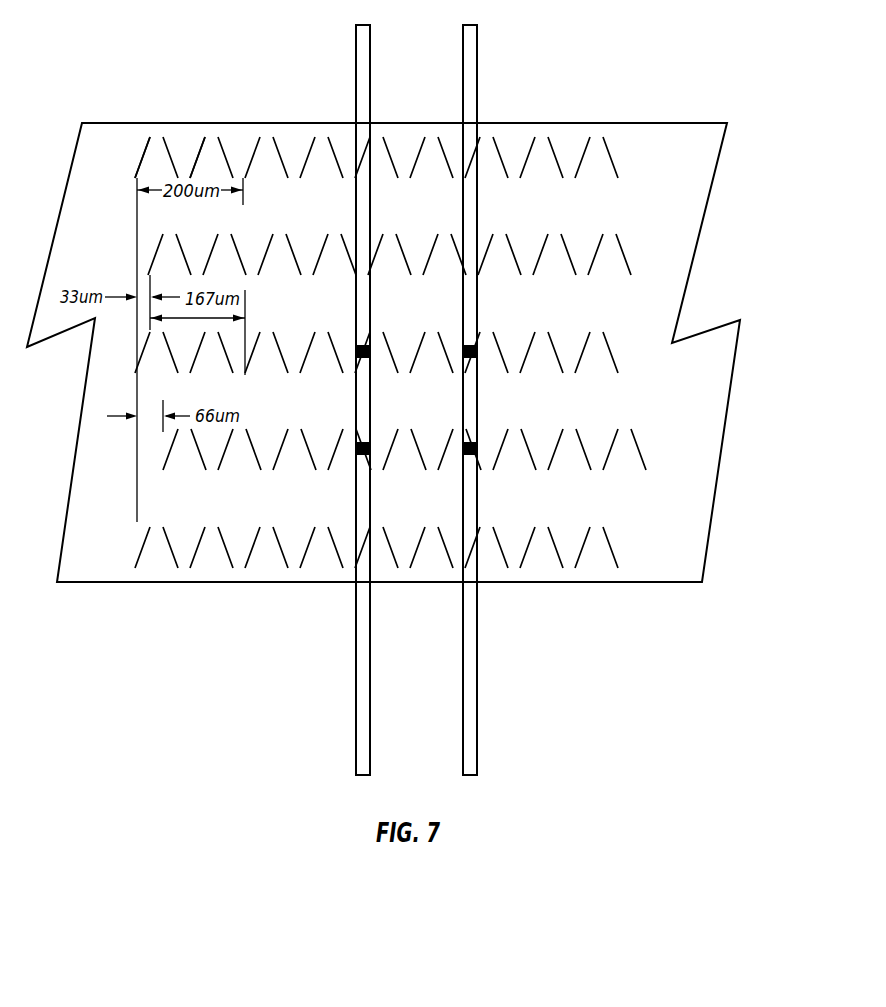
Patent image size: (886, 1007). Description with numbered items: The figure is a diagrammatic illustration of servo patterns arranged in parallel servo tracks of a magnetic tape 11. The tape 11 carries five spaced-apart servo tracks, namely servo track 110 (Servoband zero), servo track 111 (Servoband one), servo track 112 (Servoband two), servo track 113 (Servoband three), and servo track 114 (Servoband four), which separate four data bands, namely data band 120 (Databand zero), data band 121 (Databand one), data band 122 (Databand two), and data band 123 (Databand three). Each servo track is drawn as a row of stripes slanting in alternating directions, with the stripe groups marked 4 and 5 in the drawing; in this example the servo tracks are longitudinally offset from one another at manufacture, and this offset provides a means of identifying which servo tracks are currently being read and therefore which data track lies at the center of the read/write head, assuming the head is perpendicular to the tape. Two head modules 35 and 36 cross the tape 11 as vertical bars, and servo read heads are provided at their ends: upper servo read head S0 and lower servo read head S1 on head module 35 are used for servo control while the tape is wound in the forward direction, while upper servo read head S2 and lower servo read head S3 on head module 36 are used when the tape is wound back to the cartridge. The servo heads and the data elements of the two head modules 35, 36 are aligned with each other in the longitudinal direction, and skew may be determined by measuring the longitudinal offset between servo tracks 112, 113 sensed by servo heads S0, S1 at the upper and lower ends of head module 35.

The magnetic tape 11 is at (570, 123).
The head module 35 is at (370, 70).
The head module 36 is at (477, 70).
The servo track 110 is at (468, 156).
The servo track 111 is at (730, 255).
The servo track 112 is at (720, 355).
The servo track 113 is at (750, 450).
The servo track 114 is at (745, 550).
The data band 120 is at (610, 405).
The data band 121 is at (596, 300).
The data band 122 is at (595, 497).
The data band 123 is at (610, 210).
The upper servo read head S0 is at (374, 340).
The lower servo read head S1 is at (374, 466).
The upper servo read head S2 is at (481, 340).
The lower servo read head S3 is at (481, 466).
The four-stripe servo burst 4 is at (142, 156).
The five-stripe servo burst 5 is at (197, 156).